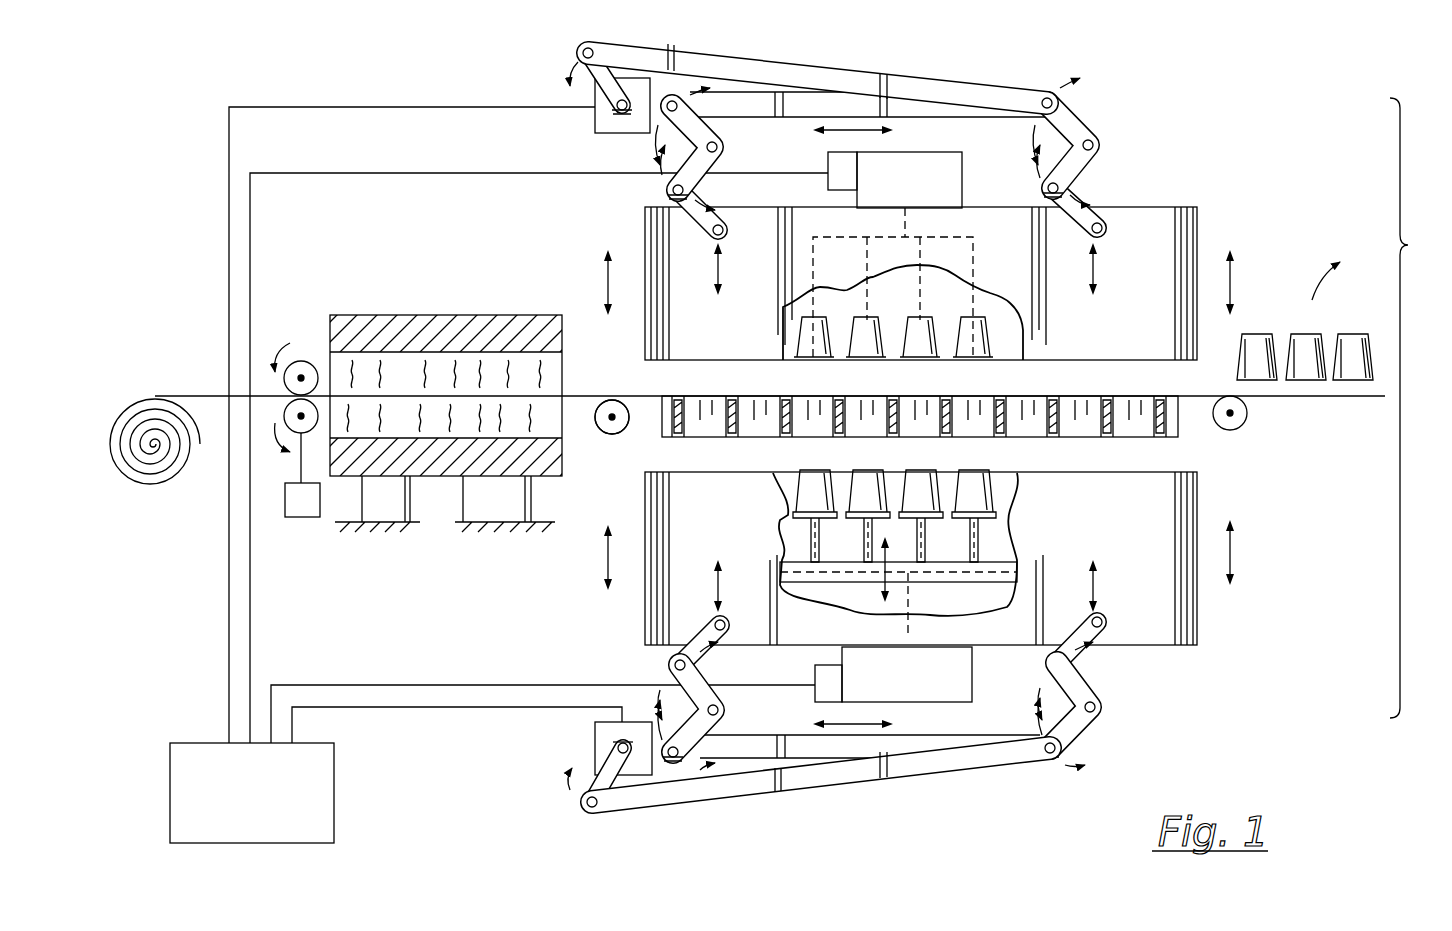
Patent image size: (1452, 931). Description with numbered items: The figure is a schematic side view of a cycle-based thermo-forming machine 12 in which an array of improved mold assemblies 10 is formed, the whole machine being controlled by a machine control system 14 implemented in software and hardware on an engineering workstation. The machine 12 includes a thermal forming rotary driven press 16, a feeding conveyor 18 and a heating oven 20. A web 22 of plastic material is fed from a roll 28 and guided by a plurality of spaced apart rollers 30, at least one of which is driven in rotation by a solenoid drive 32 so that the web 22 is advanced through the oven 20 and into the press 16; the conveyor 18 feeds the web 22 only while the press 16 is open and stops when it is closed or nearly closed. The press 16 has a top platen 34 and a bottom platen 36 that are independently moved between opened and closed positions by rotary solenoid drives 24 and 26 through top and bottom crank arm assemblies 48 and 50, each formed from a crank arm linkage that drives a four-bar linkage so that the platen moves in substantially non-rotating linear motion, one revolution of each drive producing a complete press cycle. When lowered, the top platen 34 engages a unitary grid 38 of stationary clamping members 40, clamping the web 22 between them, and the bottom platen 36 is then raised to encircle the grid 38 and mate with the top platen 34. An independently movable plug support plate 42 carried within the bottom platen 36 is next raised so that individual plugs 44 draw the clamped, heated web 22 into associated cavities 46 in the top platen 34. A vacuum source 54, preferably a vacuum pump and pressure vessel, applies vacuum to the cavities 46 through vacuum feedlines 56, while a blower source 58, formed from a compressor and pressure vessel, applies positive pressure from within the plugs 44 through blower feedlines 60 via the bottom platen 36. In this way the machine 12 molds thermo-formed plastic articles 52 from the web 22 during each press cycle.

The mold assembly 10 is at (805, 347).
The thermo-forming machine 12 is at (428, 70).
The machine control system 14 is at (335, 801).
The thermal forming rotary driven press 16 is at (1414, 408).
The feeding conveyor 18 is at (210, 378).
The heating oven 20 is at (430, 313).
The web 22 is at (610, 399).
The solenoid drive 24 is at (595, 120).
The solenoid drive 26 is at (595, 740).
The roll 28 is at (157, 490).
The rollers 30 is at (301, 360).
The solenoid drive 32 is at (303, 518).
The top platen 34 is at (1200, 228).
The bottom platen 36 is at (1200, 620).
The unitary grid 38 is at (697, 440).
The clamping members 40 is at (1062, 420).
The plug support plate 42 is at (1017, 612).
The plugs 44 is at (885, 483).
The cavities 46 is at (925, 352).
The top crank arm assembly 48 is at (813, 128).
The bottom crank arm assembly 50 is at (812, 741).
The articles 52 is at (1284, 335).
The vacuum source 54 is at (963, 188).
The vacuum feedlines 56 is at (975, 262).
The blower source 58 is at (975, 690).
The blower feedlines 60 is at (905, 629).